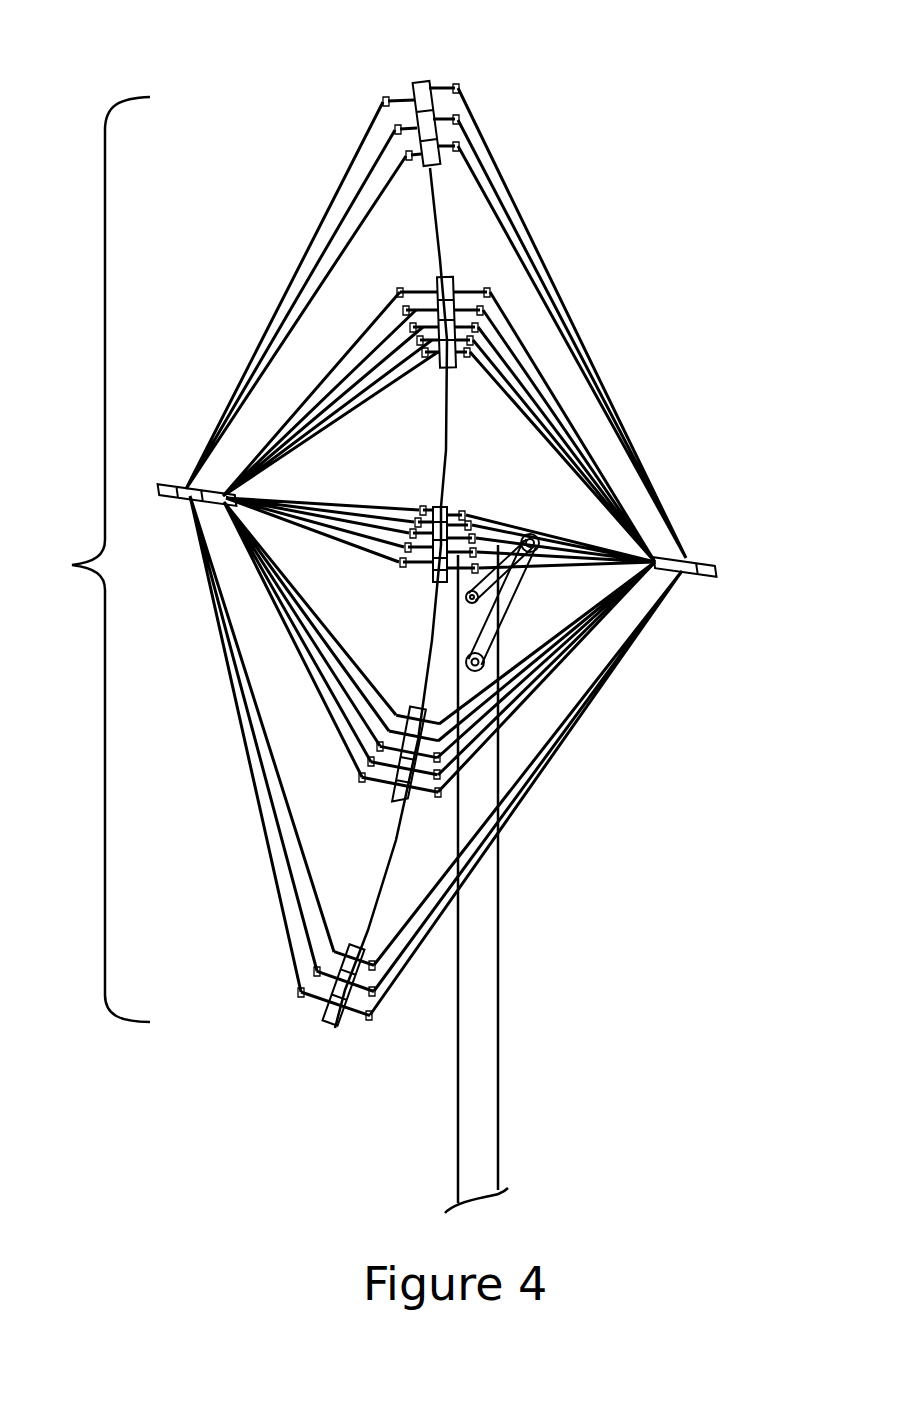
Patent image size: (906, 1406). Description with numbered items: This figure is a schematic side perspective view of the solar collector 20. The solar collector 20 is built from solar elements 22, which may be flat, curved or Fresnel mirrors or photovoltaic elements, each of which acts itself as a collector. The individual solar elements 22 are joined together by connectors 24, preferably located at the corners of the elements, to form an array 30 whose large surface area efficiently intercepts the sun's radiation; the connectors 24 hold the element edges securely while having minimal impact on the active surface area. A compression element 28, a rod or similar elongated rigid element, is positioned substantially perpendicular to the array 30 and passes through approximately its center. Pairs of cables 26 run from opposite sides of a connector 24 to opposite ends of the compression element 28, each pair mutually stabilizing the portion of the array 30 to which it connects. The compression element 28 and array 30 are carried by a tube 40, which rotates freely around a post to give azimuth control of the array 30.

The solar collector 20 is at (378, 78).
The solar elements 22 is at (440, 212).
The connectors 24 is at (450, 282).
The cables 26 is at (557, 667).
The compression element 28 is at (715, 561).
The array 30 is at (86, 559).
The tube 40 is at (473, 948).